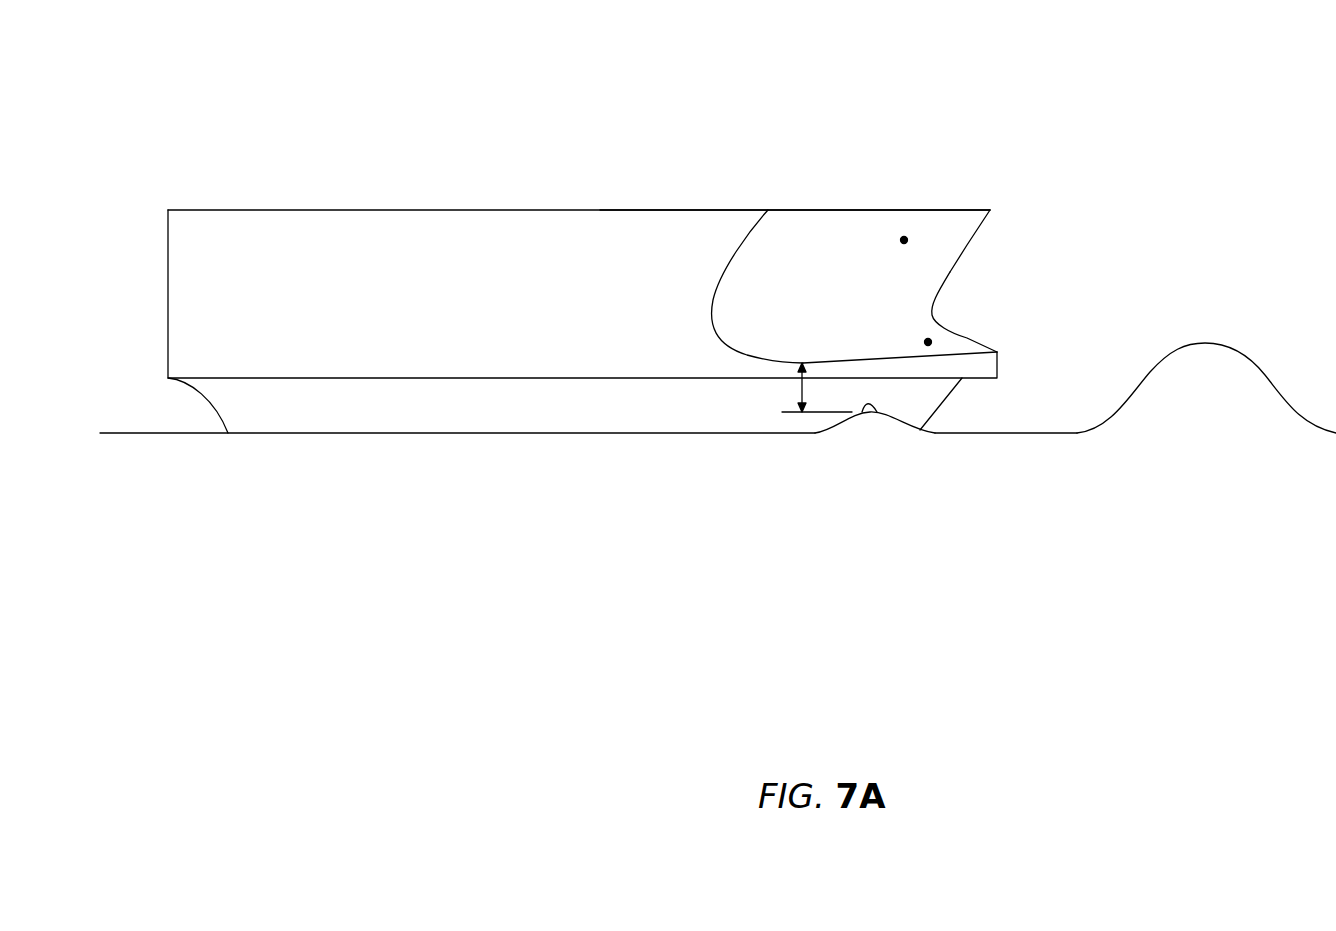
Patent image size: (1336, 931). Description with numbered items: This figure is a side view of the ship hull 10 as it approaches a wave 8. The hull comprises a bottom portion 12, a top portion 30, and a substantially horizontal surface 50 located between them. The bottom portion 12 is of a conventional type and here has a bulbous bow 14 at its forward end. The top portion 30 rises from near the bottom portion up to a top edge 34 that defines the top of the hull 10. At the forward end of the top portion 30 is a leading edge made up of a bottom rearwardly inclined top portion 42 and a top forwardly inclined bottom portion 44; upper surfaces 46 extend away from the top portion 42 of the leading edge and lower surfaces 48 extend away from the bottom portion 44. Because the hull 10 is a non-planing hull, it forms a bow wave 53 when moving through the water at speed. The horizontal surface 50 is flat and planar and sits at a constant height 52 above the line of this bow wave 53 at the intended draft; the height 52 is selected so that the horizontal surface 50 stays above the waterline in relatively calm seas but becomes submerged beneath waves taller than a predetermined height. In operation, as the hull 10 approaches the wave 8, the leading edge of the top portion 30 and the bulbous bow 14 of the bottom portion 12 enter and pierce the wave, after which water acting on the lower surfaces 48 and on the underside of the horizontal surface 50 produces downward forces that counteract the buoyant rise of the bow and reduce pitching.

The wave 8 is at (1207, 343).
The ship hull 10 is at (884, 133).
The bottom portion 12 is at (300, 418).
The bulbous bow 14 is at (943, 405).
The top portion 30 is at (393, 262).
The top edge 34 is at (825, 210).
The top portion of the leading edge 42 is at (967, 337).
The bottom portion of the leading edge 44 is at (967, 245).
The upper surfaces 46 is at (904, 240).
The lower surfaces 48 is at (928, 342).
The horizontal surface 50 is at (532, 398).
The height 52 is at (797, 390).
The bow wave 53 is at (862, 412).